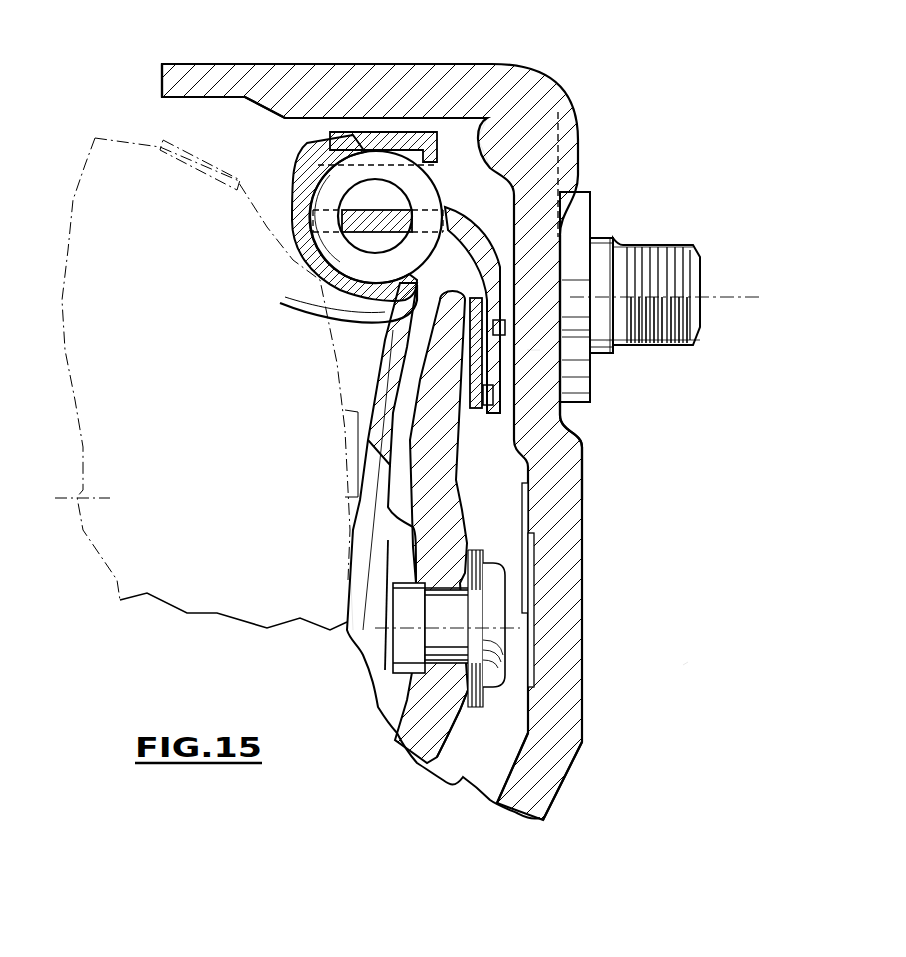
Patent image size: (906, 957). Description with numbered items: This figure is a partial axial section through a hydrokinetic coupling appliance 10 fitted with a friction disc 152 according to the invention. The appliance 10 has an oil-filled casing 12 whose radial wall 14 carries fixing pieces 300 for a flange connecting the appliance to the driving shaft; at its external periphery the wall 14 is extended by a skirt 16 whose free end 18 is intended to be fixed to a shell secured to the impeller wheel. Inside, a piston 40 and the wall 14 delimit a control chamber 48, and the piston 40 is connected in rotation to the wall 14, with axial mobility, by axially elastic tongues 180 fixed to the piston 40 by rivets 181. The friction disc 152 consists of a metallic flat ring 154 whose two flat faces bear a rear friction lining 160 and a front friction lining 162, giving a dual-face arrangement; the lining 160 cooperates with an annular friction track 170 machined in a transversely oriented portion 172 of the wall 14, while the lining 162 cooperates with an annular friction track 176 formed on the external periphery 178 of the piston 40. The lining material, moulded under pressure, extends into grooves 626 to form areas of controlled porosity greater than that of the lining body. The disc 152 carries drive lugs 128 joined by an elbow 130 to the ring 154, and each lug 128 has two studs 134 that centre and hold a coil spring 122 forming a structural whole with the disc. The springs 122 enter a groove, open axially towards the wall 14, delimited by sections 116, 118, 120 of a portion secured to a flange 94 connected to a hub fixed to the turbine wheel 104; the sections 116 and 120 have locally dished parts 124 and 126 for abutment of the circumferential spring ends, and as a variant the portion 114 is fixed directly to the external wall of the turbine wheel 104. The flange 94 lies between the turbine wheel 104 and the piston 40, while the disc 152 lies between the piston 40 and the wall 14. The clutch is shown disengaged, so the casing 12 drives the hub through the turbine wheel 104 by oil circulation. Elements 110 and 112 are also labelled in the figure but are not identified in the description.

The hydrokinetic coupling appliance 10 is at (688, 662).
The casing 12 is at (572, 789).
The radial wall 14 is at (556, 575).
The skirt 16 is at (192, 88).
The free end 18 is at (162, 80).
The piston 40 is at (445, 757).
The control chamber 48 is at (480, 740).
The flange 94 is at (378, 374).
The turbine wheel 104 is at (54, 508).
The lever lower end 110 is at (348, 595).
The lever 112 is at (392, 352).
The portion 114 is at (280, 184).
The section 116 is at (405, 132).
The section 118 is at (290, 207).
The section 120 is at (314, 306).
The spring 122 is at (490, 120).
The locally dished part 124 is at (444, 168).
The locally dished part 126 is at (392, 322).
The drive lug 128 is at (362, 182).
The elbow 130 is at (568, 152).
The stud 134 is at (352, 218).
The friction disc 152 is at (491, 424).
The flat ring 154 is at (530, 348).
The rear friction lining 160 is at (550, 406).
The front friction lining 162 is at (617, 348).
The annular friction track 170 is at (525, 312).
The transversely oriented portion 172 is at (603, 292).
The annular friction track 176 is at (540, 405).
The external periphery 178 is at (448, 350).
The axially elastic tongues 180 is at (490, 562).
The rivets 181 is at (490, 662).
The fixing pieces 300 is at (678, 277).
The grooves 626 is at (483, 387).